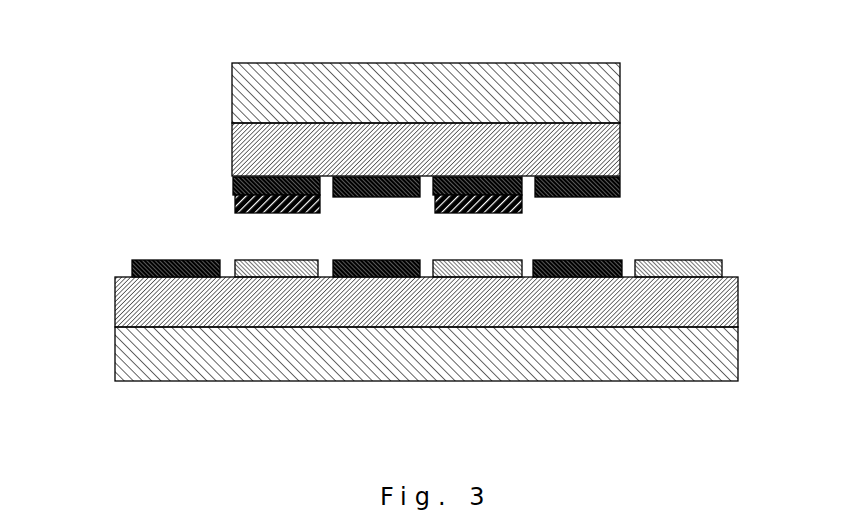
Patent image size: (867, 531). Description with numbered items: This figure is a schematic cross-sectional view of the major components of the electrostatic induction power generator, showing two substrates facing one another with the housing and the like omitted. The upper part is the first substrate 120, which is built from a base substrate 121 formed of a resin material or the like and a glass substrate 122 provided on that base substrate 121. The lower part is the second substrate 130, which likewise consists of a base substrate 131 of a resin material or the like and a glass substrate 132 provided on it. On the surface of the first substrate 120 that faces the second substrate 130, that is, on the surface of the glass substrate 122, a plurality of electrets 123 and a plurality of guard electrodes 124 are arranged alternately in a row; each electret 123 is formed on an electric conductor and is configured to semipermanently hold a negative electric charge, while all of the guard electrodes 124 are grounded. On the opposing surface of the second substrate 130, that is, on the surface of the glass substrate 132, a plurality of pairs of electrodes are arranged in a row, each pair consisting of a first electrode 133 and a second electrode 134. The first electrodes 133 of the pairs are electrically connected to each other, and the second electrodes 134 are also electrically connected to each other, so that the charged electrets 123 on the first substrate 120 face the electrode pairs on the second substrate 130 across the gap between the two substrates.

The first substrate 120 is at (430, 118).
The base substrate 121 is at (257, 78).
The glass substrate 122 is at (247, 147).
The electret 123 is at (232, 201).
The guard electrode 124 is at (373, 177).
The second substrate 130 is at (392, 365).
The base substrate 131 is at (163, 358).
The glass substrate 132 is at (133, 312).
The first electrode 133 is at (178, 262).
The second electrode 134 is at (272, 264).